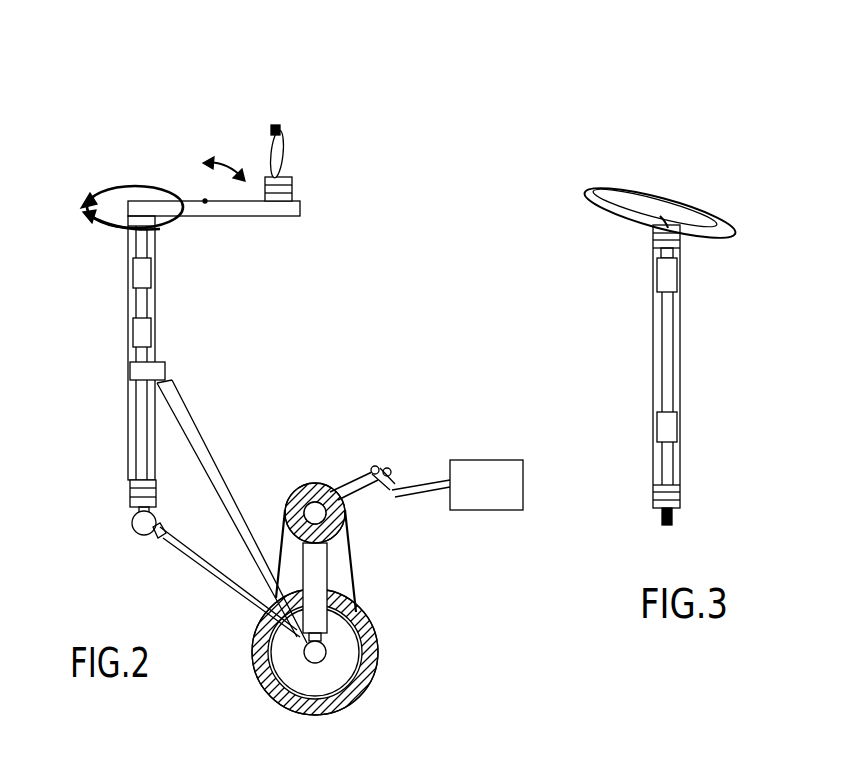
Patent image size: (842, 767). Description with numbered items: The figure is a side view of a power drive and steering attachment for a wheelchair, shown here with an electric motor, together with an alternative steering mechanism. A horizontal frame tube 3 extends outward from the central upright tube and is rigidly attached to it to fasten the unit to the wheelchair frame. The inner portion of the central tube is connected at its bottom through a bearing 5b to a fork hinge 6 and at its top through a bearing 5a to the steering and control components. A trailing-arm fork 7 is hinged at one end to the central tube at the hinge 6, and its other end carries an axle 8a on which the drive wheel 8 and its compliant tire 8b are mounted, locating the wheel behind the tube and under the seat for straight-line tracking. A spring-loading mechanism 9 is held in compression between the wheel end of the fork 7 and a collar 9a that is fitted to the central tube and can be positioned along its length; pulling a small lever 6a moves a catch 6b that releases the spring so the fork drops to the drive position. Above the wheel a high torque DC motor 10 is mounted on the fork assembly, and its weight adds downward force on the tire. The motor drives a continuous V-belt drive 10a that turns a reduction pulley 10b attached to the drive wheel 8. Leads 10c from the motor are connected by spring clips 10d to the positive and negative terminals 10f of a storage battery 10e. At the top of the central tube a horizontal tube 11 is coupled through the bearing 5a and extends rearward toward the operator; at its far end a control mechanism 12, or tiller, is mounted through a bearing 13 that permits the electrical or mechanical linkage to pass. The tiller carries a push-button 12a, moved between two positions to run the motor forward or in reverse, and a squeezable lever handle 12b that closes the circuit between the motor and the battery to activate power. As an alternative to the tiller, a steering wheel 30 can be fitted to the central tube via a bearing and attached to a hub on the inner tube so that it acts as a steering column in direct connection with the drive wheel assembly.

In FIG. 2, the horizontal frame tube 3 is at (140, 272).
In FIG. 2, the bearing 5a is at (150, 230).
In FIG. 2, the bearing 5b is at (130, 497).
In FIG. 2, the fork hinge 6 is at (142, 523).
In FIG. 2, the lever 6a is at (205, 200).
In FIG. 2, the catch 6b is at (140, 540).
In FIG. 2, the fork 7 is at (190, 560).
In FIG. 2, the drive wheel 8 is at (300, 678).
In FIG. 2, the axle 8a is at (304, 655).
In FIG. 2, the tire 8b is at (366, 690).
In FIG. 2, the spring-loading mechanism 9 is at (237, 490).
In FIG. 2, the collar 9a is at (165, 372).
In FIG. 2, the DC motor 10 is at (340, 490).
In FIG. 2, the V-belt drive 10a is at (345, 560).
In FIG. 2, the reduction pulley 10b is at (376, 640).
In FIG. 2, the leads 10c is at (320, 488).
In FIG. 2, the spring clips 10d is at (375, 466).
In FIG. 2, the storage battery 10e is at (486, 485).
In FIG. 2, the terminals 10f is at (440, 480).
In FIG. 2, the horizontal tube 11 is at (90, 195).
In FIG. 2, the control mechanism 12 is at (282, 148).
In FIG. 2, the push-button 12a is at (280, 128).
In FIG. 2, the lever handle 12b is at (268, 177).
In FIG. 2, the bearing 13 is at (370, 181).
In FIG. 3, the steering wheel 30 is at (635, 195).